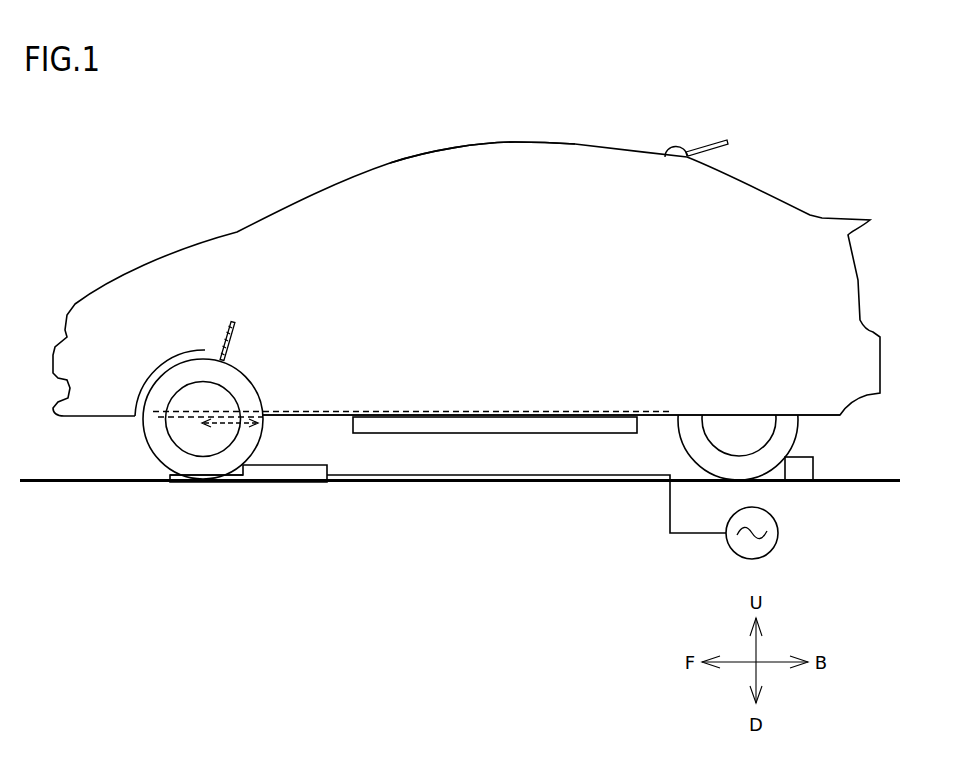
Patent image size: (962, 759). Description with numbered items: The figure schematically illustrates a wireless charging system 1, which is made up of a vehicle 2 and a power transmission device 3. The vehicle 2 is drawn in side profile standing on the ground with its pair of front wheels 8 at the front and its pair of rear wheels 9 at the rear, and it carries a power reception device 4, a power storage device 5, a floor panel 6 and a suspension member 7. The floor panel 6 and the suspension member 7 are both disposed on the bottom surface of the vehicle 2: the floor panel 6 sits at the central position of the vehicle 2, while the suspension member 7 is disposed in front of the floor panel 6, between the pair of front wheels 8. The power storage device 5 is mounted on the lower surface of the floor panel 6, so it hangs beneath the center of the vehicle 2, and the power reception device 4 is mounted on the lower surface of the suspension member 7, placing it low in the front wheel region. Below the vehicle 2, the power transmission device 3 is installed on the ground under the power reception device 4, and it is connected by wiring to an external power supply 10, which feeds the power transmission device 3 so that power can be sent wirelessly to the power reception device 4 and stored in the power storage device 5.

The wireless charging system 1 is at (265, 165).
The vehicle 2 is at (512, 141).
The power transmission device 3 is at (253, 478).
The power reception device 4 is at (217, 423).
The power storage device 5 is at (592, 433).
The floor panel 6 is at (338, 417).
The suspension member 7 is at (158, 417).
The front wheels 8 is at (192, 478).
The rear wheels 9 is at (705, 447).
The external power supply 10 is at (779, 533).